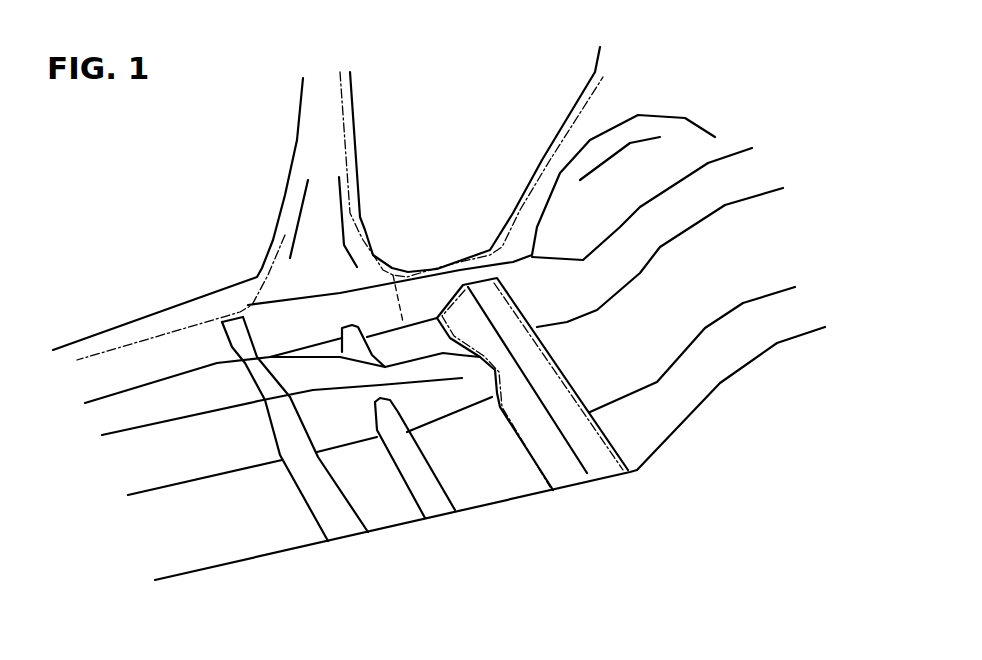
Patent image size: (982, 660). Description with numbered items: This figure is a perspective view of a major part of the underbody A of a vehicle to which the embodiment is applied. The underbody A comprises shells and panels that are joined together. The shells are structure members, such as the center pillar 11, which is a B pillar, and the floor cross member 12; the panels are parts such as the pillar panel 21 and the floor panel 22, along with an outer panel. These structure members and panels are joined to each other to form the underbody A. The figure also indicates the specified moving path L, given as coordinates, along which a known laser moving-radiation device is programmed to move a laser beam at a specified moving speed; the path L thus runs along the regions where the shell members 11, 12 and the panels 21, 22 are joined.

The center pillar 11 is at (471, 162).
The floor cross member 12 is at (338, 469).
The pillar panel 21 is at (194, 270).
The floor panel 22 is at (532, 435).
The moving path L is at (376, 263).
The underbody A is at (653, 549).